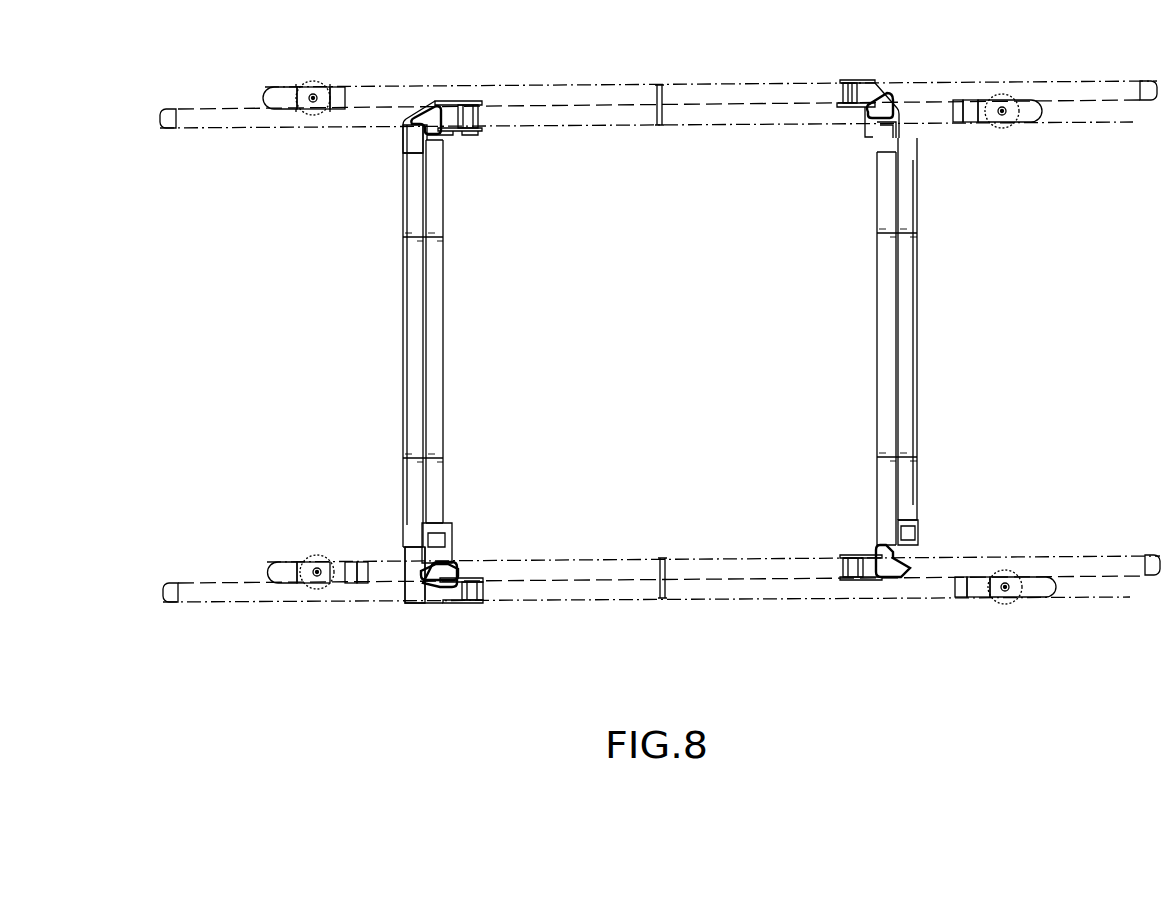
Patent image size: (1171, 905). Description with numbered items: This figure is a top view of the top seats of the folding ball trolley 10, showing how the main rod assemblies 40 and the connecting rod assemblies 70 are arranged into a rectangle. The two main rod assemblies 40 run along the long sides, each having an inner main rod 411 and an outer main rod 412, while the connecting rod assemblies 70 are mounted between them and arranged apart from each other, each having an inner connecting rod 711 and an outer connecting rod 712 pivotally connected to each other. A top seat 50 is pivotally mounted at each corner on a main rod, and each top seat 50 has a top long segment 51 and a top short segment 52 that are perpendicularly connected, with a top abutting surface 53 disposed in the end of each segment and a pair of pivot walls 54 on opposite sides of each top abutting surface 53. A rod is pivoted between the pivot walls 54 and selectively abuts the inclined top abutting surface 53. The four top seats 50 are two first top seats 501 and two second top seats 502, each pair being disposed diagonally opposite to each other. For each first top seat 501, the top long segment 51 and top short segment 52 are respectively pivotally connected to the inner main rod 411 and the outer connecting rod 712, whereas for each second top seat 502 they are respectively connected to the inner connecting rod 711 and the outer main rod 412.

The slide assembly 10 is at (438, 622).
The main rod assembly 40 is at (660, 348).
The inner main rod 411 is at (622, 125).
The outer main rod 412 is at (615, 83).
The top seat 50 is at (640, 358).
The first top seat 501 is at (427, 108).
The second top seat 502 is at (887, 104).
The top long segment 51 is at (492, 110).
The top short segment 52 is at (412, 173).
The top abutting surface 53 is at (452, 110).
The pivot wall 54 is at (469, 131).
The connecting rod assembly 70 is at (647, 336).
The inner connecting rod 711 is at (661, 342).
The outer connecting rod 712 is at (417, 428).